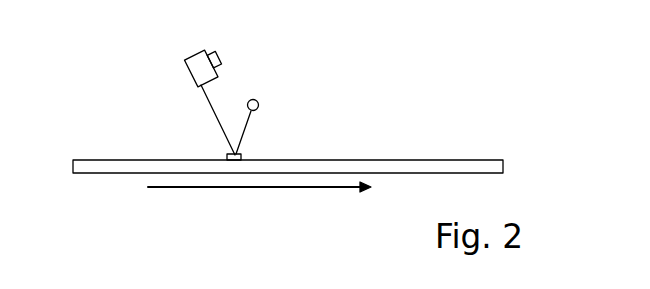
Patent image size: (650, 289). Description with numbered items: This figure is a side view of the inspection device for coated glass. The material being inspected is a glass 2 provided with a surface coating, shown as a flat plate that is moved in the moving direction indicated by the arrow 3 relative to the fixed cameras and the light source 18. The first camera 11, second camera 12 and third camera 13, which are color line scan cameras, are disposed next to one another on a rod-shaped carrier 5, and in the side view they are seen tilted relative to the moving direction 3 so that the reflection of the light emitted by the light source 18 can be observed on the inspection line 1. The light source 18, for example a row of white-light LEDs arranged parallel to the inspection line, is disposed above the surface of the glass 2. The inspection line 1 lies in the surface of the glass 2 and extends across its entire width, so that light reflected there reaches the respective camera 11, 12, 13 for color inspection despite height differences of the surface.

The inspection line 1 is at (240, 154).
The glass 2 is at (428, 168).
The arrow indicating the moving direction 3 is at (238, 187).
The rod-shaped carrier 5 is at (228, 43).
The first camera 11 is at (155, 65).
The second camera 12 is at (155, 65).
The third camera 13 is at (155, 65).
The light source 18 is at (259, 101).